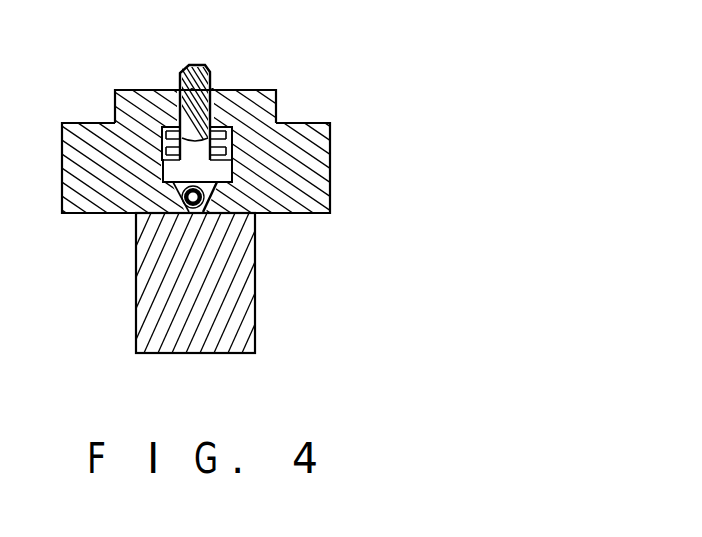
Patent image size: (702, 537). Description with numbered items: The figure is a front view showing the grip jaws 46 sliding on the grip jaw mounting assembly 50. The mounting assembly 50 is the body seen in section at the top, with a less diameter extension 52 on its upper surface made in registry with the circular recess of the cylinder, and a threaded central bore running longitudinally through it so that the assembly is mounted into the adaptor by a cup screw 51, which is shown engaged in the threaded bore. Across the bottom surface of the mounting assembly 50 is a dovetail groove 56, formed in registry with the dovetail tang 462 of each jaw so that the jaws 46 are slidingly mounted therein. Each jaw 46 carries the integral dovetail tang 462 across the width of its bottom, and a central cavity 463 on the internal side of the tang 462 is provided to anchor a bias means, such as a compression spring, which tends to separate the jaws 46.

The grip jaw 46 is at (255, 318).
The grip jaw mounting assembly 50 is at (332, 175).
The cup screw 51 is at (210, 70).
The less diameter extension 52 is at (278, 104).
The dovetail groove 56 is at (160, 122).
The dovetail tang 462 is at (212, 206).
The central cavity 463 is at (180, 208).